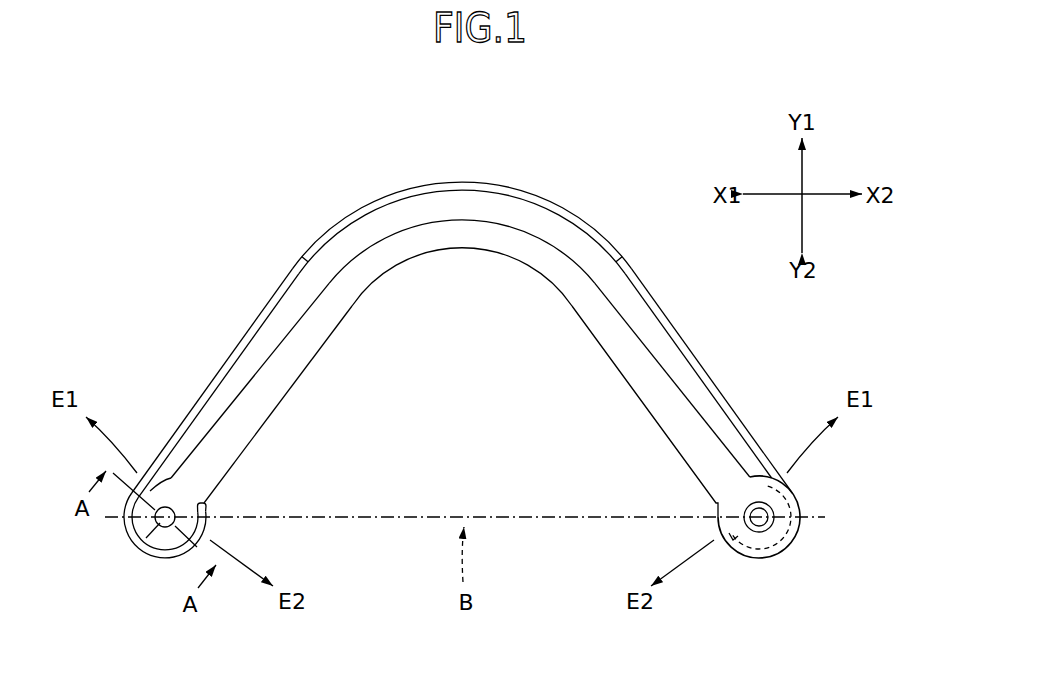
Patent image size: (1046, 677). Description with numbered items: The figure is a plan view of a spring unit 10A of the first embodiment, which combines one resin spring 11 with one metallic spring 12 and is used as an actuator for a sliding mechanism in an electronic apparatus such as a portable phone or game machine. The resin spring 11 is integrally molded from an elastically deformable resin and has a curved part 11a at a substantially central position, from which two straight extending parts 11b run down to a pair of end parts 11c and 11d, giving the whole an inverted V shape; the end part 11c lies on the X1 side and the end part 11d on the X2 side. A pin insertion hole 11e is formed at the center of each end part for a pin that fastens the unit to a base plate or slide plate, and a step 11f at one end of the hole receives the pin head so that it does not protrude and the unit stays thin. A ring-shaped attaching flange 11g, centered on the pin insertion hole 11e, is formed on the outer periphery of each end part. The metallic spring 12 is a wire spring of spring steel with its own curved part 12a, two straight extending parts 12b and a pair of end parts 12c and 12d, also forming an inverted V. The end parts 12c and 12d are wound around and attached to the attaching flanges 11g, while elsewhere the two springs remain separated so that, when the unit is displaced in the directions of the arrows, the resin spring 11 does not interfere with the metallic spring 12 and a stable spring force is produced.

The spring unit 10A is at (673, 91).
The resin spring 11 is at (540, 284).
The curved part 11a is at (460, 250).
The extending part 11b is at (290, 386).
The end part 11c is at (158, 548).
The end part 11d is at (758, 559).
The pin insertion hole 11e is at (134, 545).
The step for the pin 11f is at (771, 530).
The attaching flange 11g is at (208, 521).
The metallic spring 12 is at (574, 202).
The curved part 12a is at (465, 181).
The extending part 12b is at (256, 338).
The end part 12c is at (173, 557).
The end part 12d is at (779, 554).